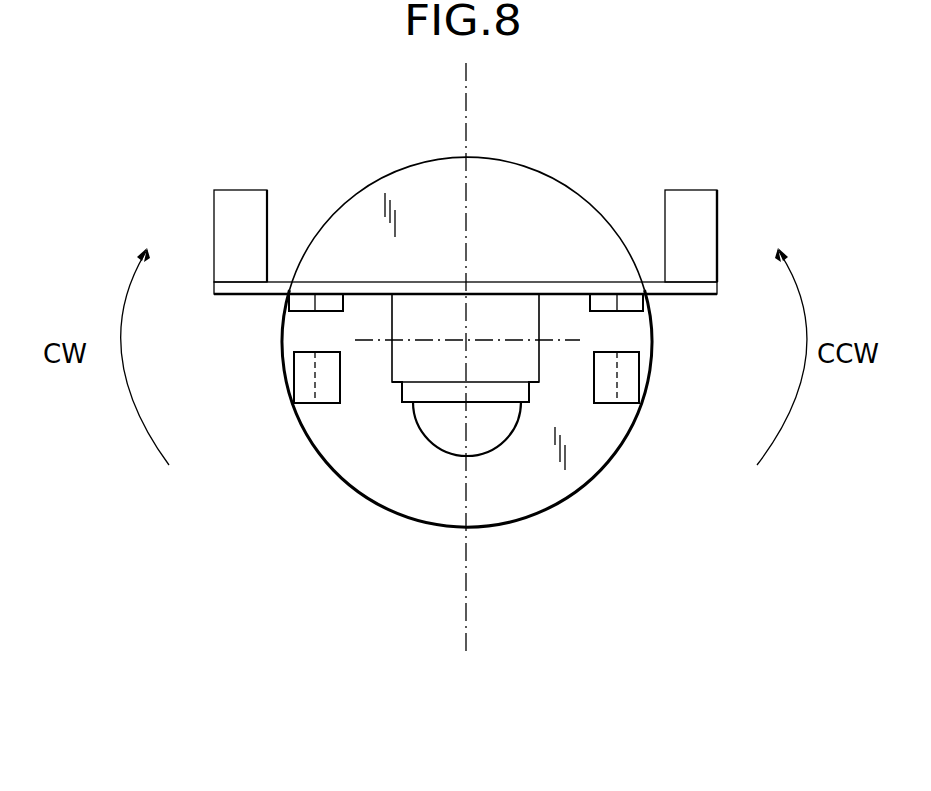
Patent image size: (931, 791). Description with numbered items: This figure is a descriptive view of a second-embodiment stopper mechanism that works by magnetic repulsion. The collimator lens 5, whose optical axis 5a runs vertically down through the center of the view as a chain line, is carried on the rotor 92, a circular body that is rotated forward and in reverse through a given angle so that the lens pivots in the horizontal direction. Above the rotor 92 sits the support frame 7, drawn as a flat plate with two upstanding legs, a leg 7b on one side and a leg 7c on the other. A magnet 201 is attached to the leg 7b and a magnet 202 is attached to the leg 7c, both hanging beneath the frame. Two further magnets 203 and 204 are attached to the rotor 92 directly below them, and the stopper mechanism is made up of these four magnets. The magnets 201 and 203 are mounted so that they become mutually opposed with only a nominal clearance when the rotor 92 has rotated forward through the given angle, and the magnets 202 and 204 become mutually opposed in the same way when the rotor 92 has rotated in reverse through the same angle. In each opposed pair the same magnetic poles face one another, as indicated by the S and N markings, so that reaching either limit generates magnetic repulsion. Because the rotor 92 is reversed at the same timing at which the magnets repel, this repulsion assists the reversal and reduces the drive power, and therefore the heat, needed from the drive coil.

The collimator lens 5 is at (513, 435).
The optical axis of the collimator lens 5a is at (466, 590).
The support frame 7 is at (697, 201).
The leg of the support frame 7b is at (235, 295).
The leg of the support frame 7c is at (683, 288).
The rotor 92 is at (590, 437).
The magnet 201 is at (298, 301).
The magnet 202 is at (628, 301).
The magnet 203 is at (310, 404).
The magnet 204 is at (624, 370).